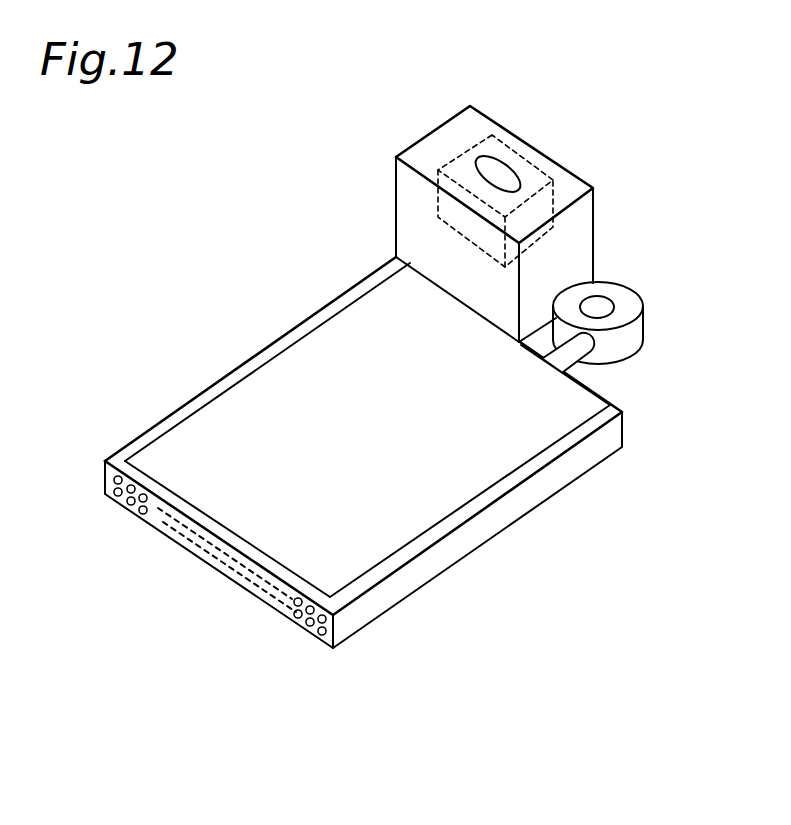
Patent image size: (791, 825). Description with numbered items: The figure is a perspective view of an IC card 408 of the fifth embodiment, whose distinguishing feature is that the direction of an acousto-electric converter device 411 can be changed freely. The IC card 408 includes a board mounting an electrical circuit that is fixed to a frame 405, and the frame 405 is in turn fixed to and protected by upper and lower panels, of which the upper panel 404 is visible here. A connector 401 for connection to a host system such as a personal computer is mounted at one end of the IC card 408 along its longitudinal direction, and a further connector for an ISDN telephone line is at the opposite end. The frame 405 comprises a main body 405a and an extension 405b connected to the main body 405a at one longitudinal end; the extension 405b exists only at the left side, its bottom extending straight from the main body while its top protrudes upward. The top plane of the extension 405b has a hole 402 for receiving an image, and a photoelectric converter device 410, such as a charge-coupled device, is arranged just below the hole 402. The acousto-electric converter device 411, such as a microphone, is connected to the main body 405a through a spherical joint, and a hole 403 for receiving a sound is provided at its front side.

The connector 401 is at (308, 624).
The hole 402 is at (496, 172).
The hole 403 is at (598, 306).
The upper panel 404 is at (515, 430).
The frame 405 is at (383, 467).
The main body 405a is at (533, 500).
The extension 405b is at (395, 203).
The IC card 408 is at (252, 335).
The photoelectric converter device 410 is at (464, 224).
The acousto-electric converter device 411 is at (632, 293).